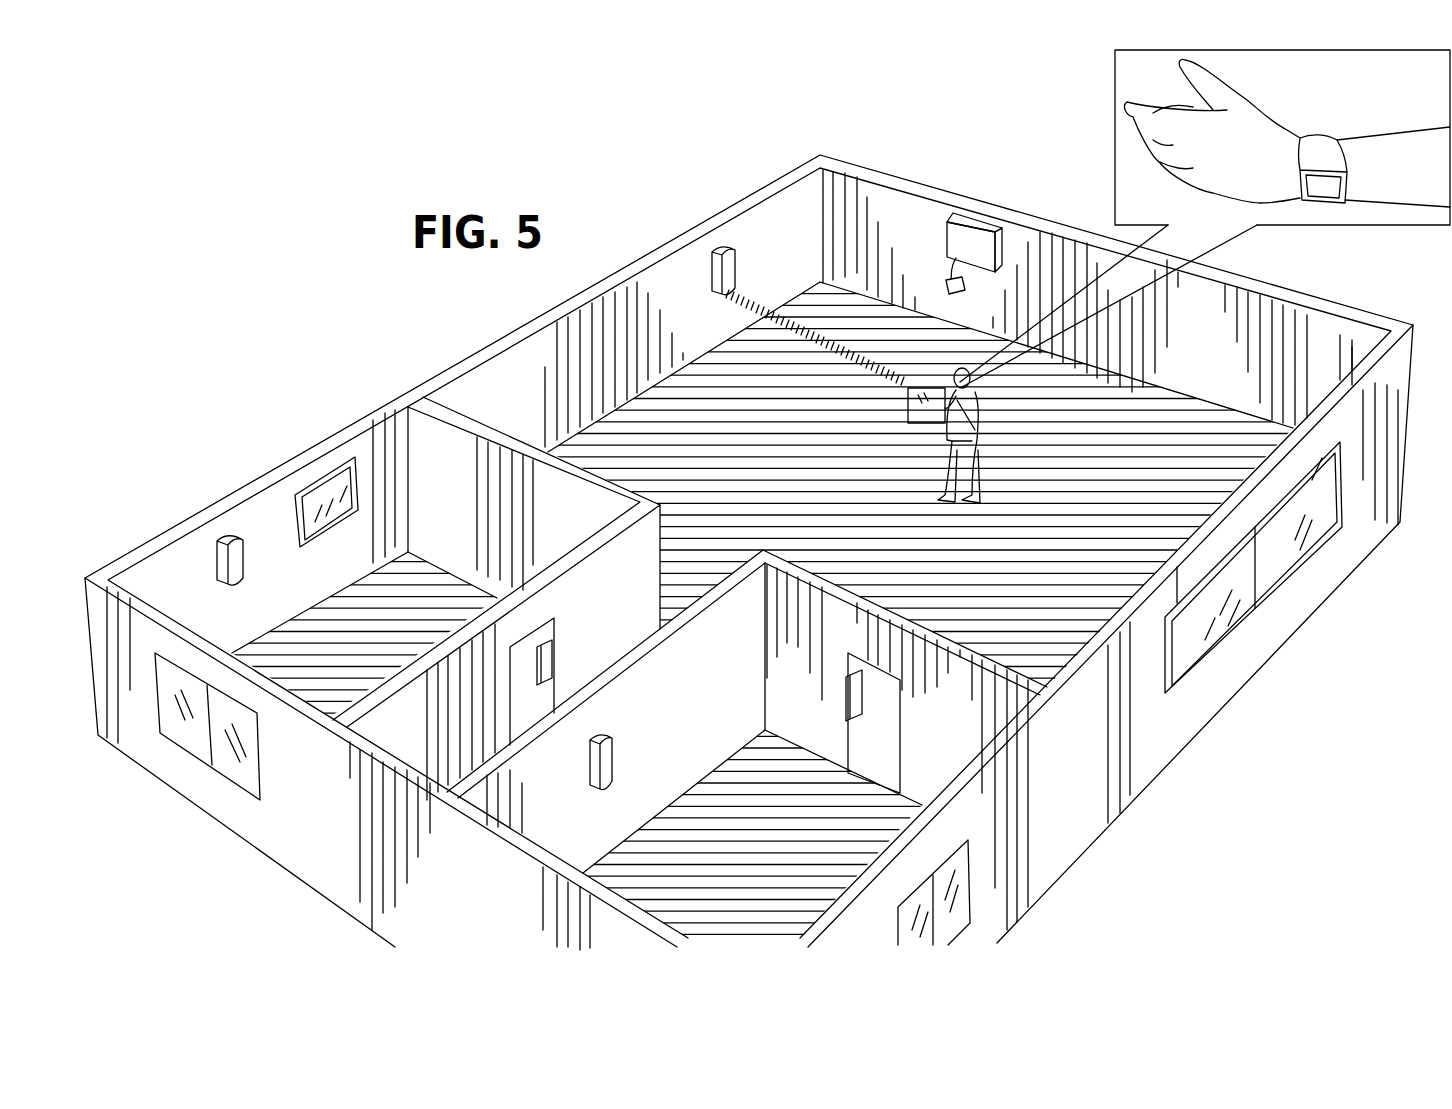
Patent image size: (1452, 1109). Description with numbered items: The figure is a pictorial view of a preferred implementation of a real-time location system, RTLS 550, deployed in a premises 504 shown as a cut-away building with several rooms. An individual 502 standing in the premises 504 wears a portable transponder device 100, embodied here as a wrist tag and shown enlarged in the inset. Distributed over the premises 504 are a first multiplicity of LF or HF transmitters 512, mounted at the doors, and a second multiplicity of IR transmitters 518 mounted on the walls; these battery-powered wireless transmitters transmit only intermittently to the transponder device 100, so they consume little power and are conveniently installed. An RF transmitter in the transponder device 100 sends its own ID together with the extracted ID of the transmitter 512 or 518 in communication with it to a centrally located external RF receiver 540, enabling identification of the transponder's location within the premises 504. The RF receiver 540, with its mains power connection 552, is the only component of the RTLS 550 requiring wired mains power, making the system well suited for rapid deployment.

The portable transponder device 100 is at (1328, 187).
The individual 502 is at (980, 418).
The premises 504 is at (462, 371).
The LF or HF transmitters 512 is at (553, 666).
The IR transmitters 518 is at (718, 247).
The external RF receiver 540 is at (978, 222).
The RTLS 550 is at (1208, 798).
The mains power connection 552 is at (945, 281).